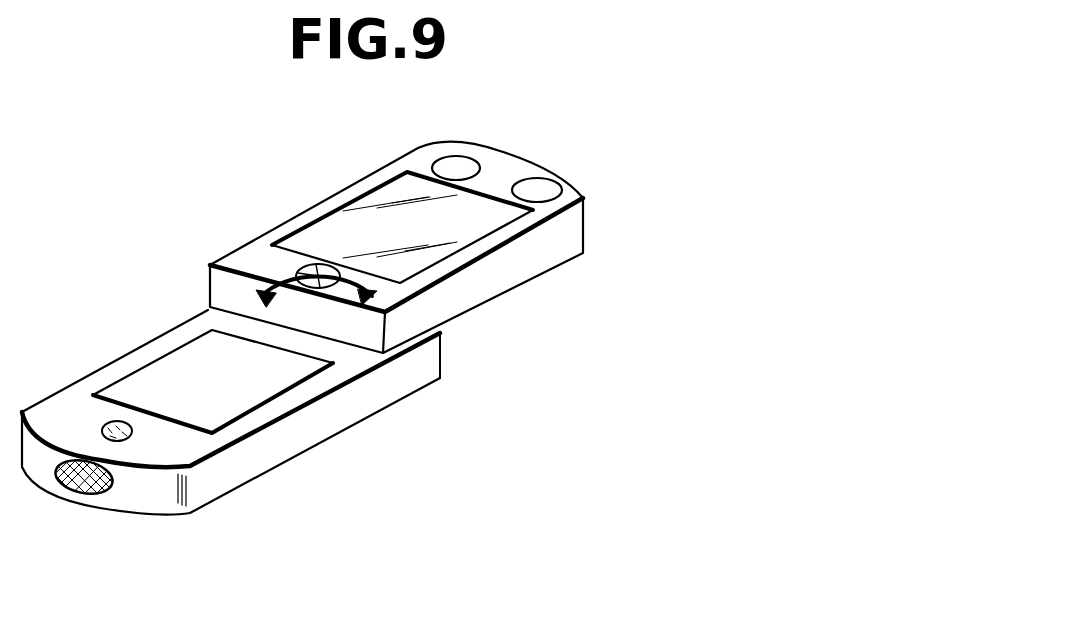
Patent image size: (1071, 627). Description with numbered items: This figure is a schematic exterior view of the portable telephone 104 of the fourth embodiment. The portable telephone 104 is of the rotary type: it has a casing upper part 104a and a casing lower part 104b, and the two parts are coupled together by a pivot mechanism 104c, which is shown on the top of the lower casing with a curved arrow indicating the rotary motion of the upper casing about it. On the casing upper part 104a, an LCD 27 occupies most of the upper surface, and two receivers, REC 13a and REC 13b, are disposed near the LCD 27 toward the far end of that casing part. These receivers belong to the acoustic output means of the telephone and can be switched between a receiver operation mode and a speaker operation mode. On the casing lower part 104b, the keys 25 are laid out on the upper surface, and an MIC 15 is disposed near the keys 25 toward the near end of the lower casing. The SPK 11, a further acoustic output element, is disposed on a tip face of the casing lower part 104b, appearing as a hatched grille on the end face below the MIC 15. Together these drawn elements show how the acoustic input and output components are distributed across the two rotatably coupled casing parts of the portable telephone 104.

The portable telephone 104 is at (163, 202).
The casing upper part 104a is at (563, 249).
The casing lower part 104b is at (345, 420).
The pivot mechanism 104c is at (320, 288).
The LCD 27 is at (466, 230).
The keys 25 is at (238, 398).
The REC 13a is at (442, 155).
The REC 13b is at (550, 188).
The MIC 15 is at (133, 432).
The SPK 11 is at (90, 493).